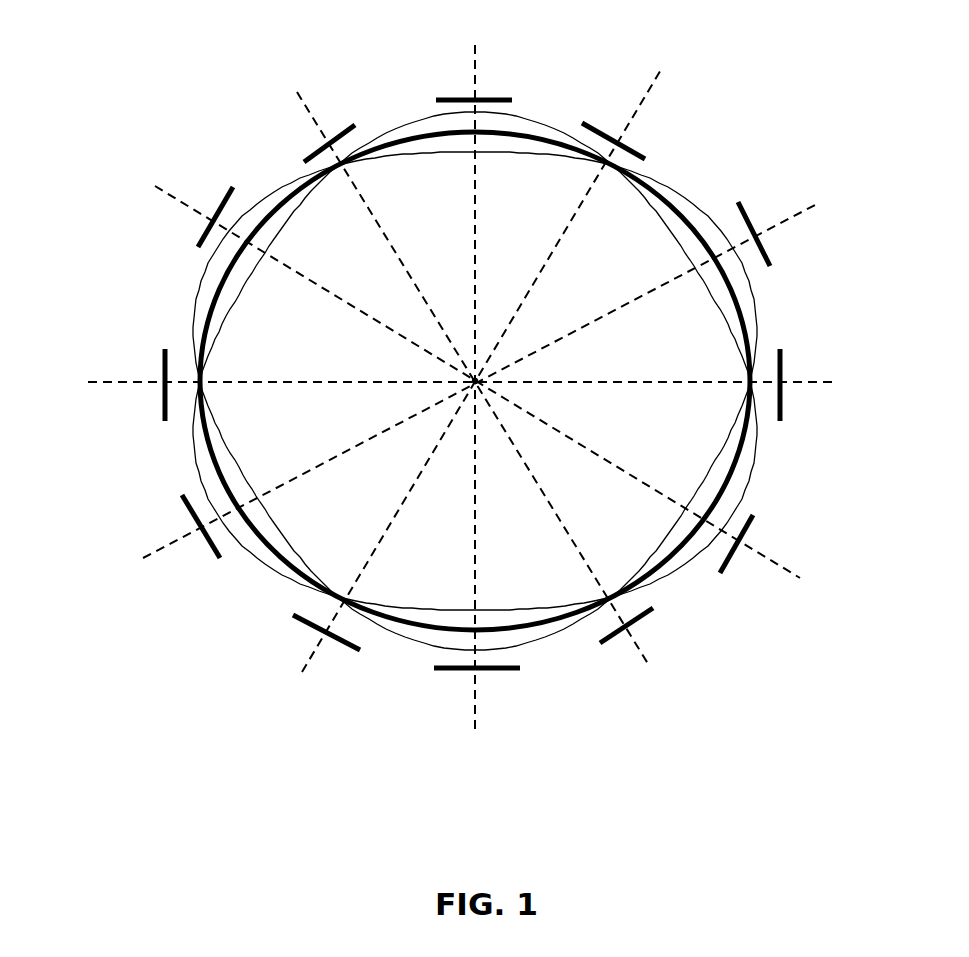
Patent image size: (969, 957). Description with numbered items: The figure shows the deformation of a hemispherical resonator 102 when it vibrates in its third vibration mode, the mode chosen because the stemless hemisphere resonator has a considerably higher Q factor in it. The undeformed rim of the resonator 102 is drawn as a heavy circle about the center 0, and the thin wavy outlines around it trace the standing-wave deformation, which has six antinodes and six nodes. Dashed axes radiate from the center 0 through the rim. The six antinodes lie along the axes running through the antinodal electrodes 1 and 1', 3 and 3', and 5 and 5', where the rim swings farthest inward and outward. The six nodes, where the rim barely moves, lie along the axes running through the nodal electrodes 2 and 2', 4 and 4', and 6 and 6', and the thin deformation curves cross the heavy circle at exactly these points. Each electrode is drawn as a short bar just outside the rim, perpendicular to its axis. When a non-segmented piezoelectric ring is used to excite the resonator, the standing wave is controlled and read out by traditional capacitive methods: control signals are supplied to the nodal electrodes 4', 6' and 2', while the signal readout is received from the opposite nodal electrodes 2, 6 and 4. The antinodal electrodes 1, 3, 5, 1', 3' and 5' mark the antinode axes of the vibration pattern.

The center of resonator 0 is at (456, 377).
The resonator 102 is at (718, 222).
The antinodal electrode 1 is at (525, 57).
The nodal electrode 2 is at (672, 106).
The antinodal electrode 3 is at (823, 219).
The nodal electrode 4 is at (852, 387).
The antinodal electrode 5 is at (790, 579).
The nodal electrode 6 is at (680, 667).
The antinodal electrode 1' is at (467, 733).
The nodal electrode 2' is at (300, 667).
The antinodal electrode 3' is at (147, 556).
The nodal electrode 4' is at (96, 403).
The antinodal electrode 5' is at (211, 170).
The nodal electrode 6' is at (351, 86).